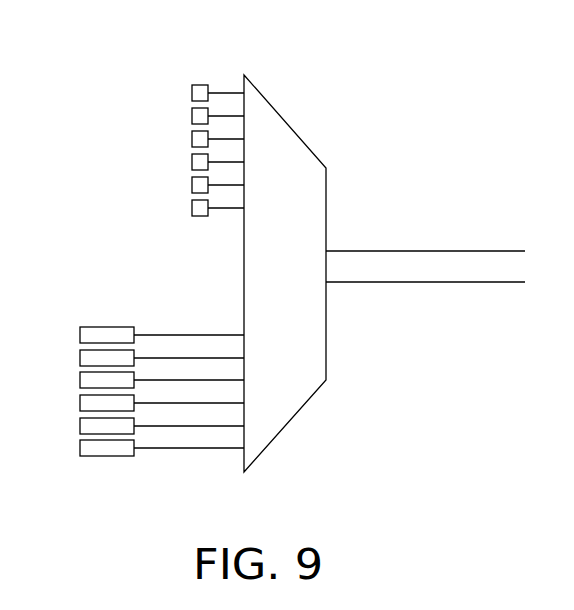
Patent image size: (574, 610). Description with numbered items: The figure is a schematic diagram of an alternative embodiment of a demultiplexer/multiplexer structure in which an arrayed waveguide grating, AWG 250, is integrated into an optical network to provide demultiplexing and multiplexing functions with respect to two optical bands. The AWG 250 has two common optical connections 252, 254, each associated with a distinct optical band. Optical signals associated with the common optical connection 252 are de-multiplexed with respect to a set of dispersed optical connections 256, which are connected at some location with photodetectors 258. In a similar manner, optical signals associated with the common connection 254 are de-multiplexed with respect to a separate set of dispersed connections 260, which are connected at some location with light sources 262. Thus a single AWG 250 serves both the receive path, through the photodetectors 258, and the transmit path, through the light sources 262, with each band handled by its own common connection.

The AWG 250 is at (295, 131).
The common optical connection 252 is at (371, 250).
The common optical connection 254 is at (427, 283).
The dispersed optical connections 256 is at (225, 93).
The photodetectors 258 is at (198, 84).
The dispersed connections 260 is at (202, 452).
The light sources 262 is at (106, 461).